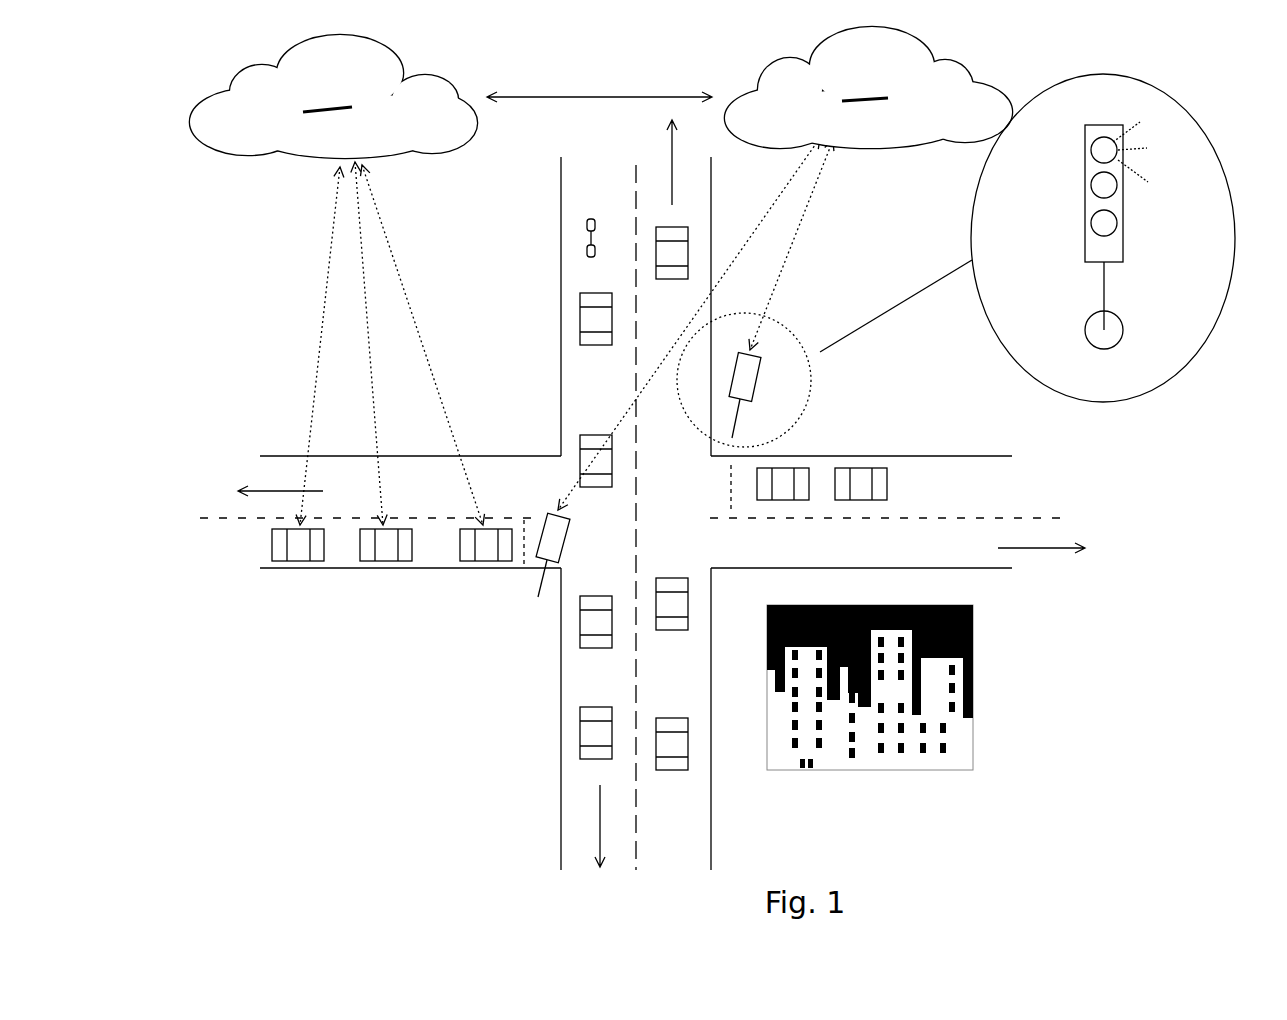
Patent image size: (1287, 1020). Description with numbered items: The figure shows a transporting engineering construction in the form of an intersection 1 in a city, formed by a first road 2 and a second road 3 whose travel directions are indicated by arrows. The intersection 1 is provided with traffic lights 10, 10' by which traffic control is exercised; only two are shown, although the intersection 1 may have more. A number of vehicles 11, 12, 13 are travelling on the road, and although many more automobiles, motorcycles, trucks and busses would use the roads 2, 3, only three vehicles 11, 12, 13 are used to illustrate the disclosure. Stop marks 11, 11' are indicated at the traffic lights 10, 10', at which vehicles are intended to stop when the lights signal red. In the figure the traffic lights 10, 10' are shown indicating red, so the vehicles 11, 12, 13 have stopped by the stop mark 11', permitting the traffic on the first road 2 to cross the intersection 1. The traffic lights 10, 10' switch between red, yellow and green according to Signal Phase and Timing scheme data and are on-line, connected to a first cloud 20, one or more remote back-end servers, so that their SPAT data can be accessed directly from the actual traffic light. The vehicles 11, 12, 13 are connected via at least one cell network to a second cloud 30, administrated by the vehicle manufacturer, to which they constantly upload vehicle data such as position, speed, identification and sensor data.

The intersection 1 is at (513, 607).
The first road 2 is at (560, 272).
The second road 3 is at (932, 456).
The traffic light 10 is at (824, 293).
The traffic light 10' is at (678, 367).
The vehicle 11 is at (512, 397).
The stop mark 11' is at (511, 517).
The vehicle 12 is at (388, 563).
The vehicle 13 is at (485, 564).
The first cloud 20 is at (947, 52).
The second cloud 30 is at (245, 150).